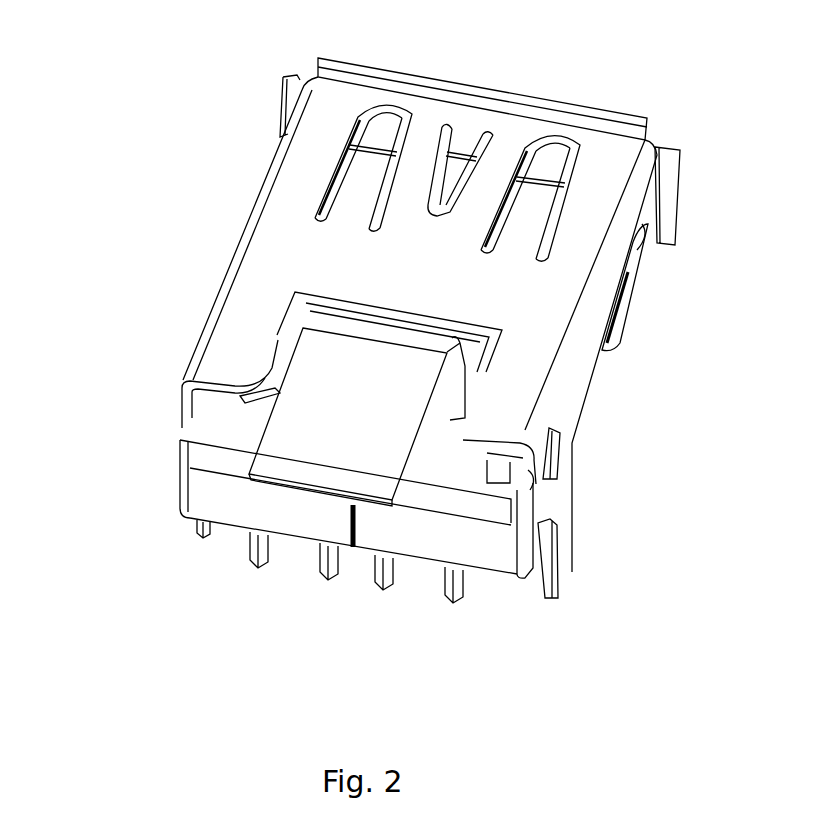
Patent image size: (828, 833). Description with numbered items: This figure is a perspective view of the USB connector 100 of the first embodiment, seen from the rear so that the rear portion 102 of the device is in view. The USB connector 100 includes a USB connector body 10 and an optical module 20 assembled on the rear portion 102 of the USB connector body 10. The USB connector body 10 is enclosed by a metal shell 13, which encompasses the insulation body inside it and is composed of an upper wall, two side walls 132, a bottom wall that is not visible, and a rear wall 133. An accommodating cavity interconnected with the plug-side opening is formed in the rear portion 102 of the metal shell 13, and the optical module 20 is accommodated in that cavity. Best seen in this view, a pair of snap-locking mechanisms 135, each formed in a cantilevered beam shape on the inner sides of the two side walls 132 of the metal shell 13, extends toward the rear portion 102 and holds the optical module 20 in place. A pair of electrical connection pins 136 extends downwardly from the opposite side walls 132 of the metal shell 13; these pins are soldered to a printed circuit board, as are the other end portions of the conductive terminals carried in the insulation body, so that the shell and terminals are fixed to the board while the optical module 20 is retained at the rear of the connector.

The USB connector 100 is at (113, 23).
The USB connector body 10 is at (207, 284).
The metal shell 13 is at (278, 197).
The side walls 132 is at (588, 360).
The rear wall 133 is at (307, 520).
The snap-locking mechanism 135 is at (282, 391).
The electrical connection pins 136 is at (563, 568).
The rear portion 102 is at (506, 462).
The optical module 20 is at (277, 354).